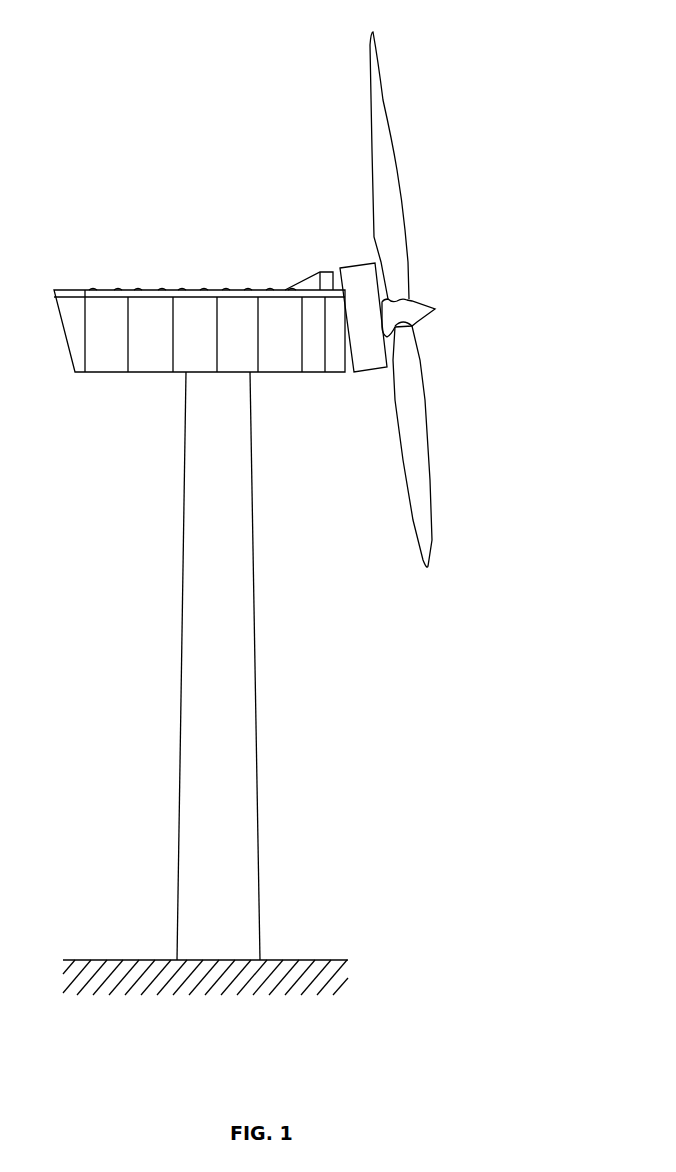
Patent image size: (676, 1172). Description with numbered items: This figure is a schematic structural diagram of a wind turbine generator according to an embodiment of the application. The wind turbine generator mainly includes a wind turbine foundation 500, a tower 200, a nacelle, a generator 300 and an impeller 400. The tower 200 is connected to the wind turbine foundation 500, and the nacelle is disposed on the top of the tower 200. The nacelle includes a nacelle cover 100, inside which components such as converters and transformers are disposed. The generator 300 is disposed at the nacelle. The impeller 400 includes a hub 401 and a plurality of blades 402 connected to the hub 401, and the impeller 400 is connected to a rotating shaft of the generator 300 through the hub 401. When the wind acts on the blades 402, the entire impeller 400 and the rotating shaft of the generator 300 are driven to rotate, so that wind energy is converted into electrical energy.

The nacelle cover 100 is at (167, 283).
The tower 200 is at (228, 585).
The generator 300 is at (358, 263).
The impeller 400 is at (466, 299).
The hub 401 is at (406, 296).
The blade 402 is at (412, 370).
The wind turbine foundation 500 is at (323, 960).